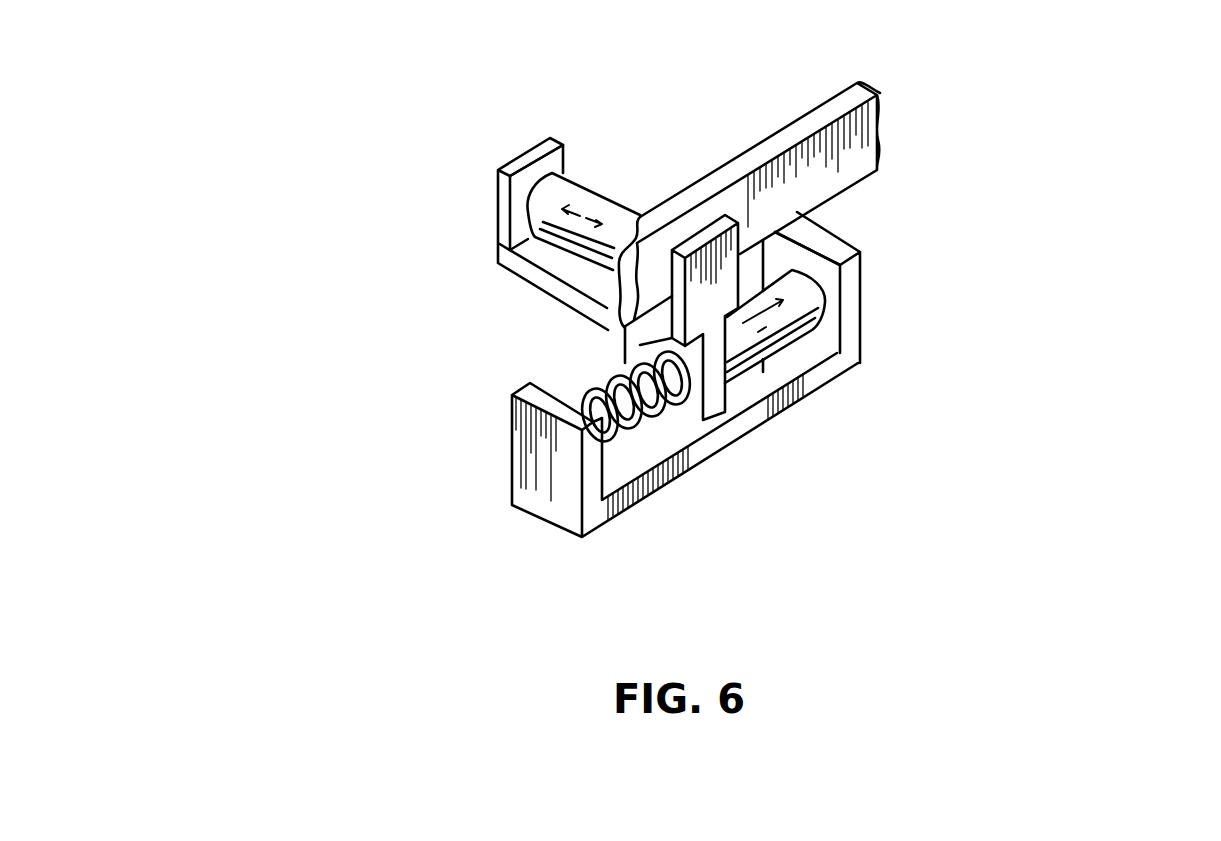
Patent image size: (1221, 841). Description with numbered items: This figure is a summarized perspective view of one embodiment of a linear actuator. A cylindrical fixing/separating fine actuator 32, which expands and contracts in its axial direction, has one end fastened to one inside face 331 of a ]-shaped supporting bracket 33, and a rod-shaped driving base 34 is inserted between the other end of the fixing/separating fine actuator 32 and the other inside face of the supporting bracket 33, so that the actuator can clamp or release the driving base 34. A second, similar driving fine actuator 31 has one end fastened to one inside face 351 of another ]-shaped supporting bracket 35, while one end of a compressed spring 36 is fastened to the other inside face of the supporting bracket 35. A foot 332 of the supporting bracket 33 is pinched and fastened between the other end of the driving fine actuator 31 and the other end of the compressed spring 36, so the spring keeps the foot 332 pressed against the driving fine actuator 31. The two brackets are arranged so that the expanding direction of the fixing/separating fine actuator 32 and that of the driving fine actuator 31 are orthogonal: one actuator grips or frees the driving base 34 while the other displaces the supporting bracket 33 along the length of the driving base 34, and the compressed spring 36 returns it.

The driving fine actuator 31 is at (802, 342).
The fixing/separating fine actuator 32 is at (587, 190).
The supporting bracket 33 is at (523, 265).
The driving base 34 is at (810, 117).
The supporting bracket 35 is at (753, 420).
The compressed spring 36 is at (655, 415).
The inside face 331 is at (517, 195).
The foot 332 is at (633, 348).
The inside face 351 is at (832, 300).